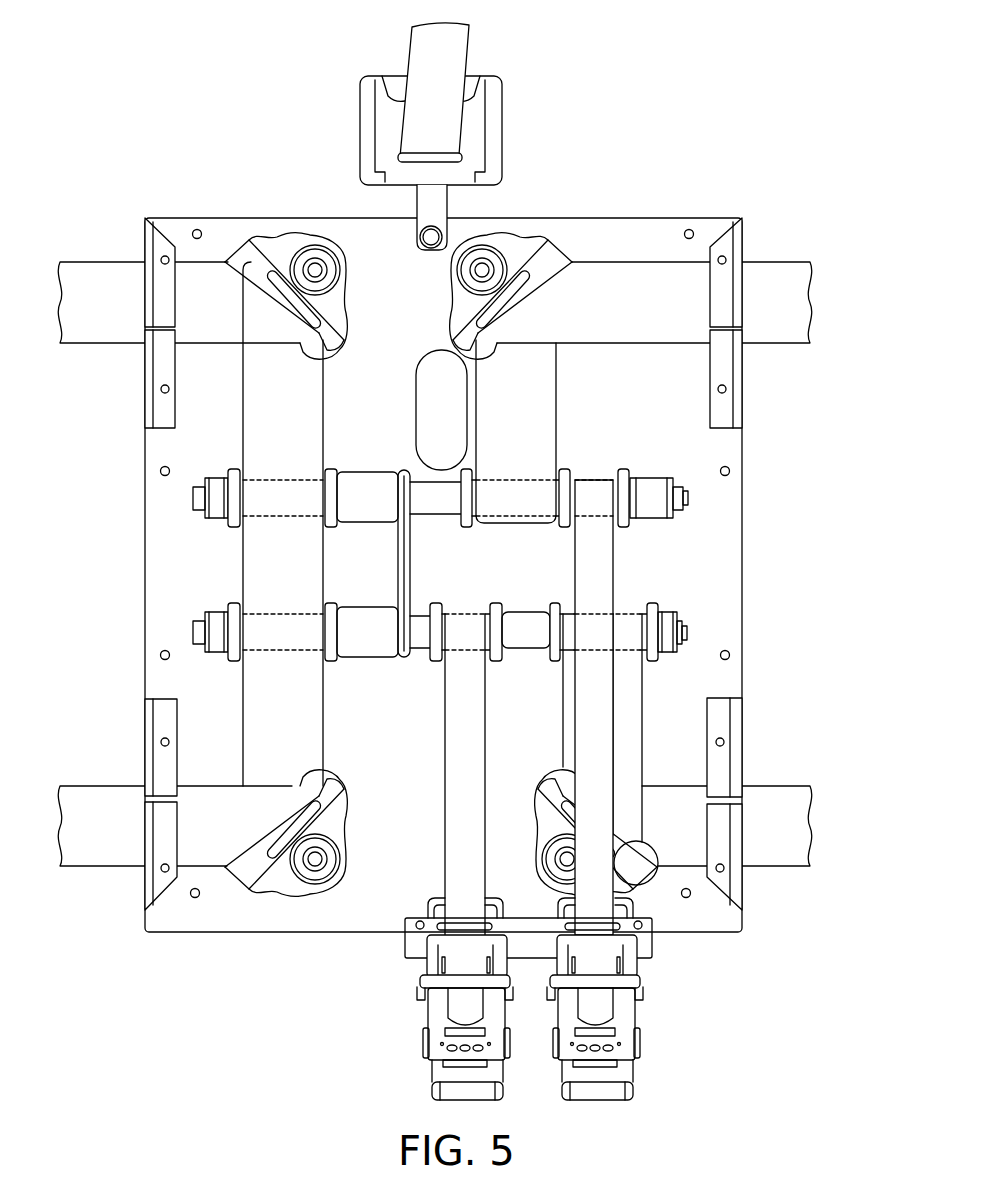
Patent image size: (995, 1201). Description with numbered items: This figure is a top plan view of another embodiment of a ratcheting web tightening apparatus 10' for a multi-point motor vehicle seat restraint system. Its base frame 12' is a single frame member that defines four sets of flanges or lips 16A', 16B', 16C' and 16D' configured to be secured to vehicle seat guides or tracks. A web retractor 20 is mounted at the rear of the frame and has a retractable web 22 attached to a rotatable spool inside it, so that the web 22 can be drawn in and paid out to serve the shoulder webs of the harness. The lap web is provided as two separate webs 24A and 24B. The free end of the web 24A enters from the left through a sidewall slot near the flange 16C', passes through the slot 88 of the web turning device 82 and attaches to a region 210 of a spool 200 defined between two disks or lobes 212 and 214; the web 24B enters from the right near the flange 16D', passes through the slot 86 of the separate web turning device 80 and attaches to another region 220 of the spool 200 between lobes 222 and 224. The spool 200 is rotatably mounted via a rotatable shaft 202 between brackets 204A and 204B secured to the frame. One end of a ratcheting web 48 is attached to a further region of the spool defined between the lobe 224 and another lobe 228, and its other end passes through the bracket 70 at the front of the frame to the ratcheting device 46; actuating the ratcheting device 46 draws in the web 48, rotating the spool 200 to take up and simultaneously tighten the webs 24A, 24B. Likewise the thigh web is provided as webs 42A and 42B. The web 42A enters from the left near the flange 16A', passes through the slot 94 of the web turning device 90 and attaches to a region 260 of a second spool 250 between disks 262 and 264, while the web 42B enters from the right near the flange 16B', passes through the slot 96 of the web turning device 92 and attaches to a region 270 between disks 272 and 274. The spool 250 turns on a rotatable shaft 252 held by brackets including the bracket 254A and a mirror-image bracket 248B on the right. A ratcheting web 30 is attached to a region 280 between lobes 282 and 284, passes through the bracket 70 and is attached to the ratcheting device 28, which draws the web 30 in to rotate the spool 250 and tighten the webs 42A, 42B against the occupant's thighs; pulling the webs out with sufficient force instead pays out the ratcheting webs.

The ratcheting web tightening apparatus 10' is at (435, 553).
The base frame 12' is at (443, 603).
The flange 16A' is at (173, 836).
The flange 16B' is at (758, 809).
The flange 16C' is at (155, 297).
The flange 16D' is at (736, 297).
The web retractor 20 is at (503, 113).
The retractable web 22 is at (466, 48).
The lap web 24A is at (83, 345).
The lap web 24B is at (768, 345).
The ratcheting device 28 is at (412, 1010).
The ratcheting web 30 is at (465, 722).
The thigh web 42A is at (110, 786).
The thigh web 42B is at (778, 786).
The ratcheting device 46 is at (648, 1005).
The ratcheting web 48 is at (590, 720).
The bracket 70 is at (405, 940).
The web turning device 80 is at (505, 248).
The web turning device 82 is at (287, 252).
The slot 86 is at (557, 257).
The slot 88 is at (242, 248).
The web turning device 90 is at (345, 835).
The web turning device 92 is at (640, 880).
The slot 94 is at (335, 782).
The slot 96 is at (645, 860).
The spool 200 is at (370, 470).
The rotatable shaft 202 is at (482, 462).
The bracket 204A is at (210, 478).
The bracket 204B is at (676, 478).
The region of spool 210 is at (279, 490).
The disk or lobe 212 is at (235, 469).
The disk or lobe 214 is at (331, 469).
The region of spool 220 is at (516, 492).
The disk or lobe 222 is at (466, 469).
The disk or lobe 224 is at (565, 469).
The disk or lobe 228 is at (624, 469).
The nut 248B is at (678, 612).
The spool 250 is at (368, 662).
The rotatable shaft 252 is at (478, 621).
The bracket 254A is at (210, 612).
The region of spool 260 is at (279, 620).
The disk 262 is at (235, 603).
The disk 264 is at (331, 603).
The region of spool 270 is at (628, 620).
The disk 272 is at (556, 603).
The disk 274 is at (655, 603).
The region of spool 280 is at (462, 620).
The disk or lobe 282 is at (436, 603).
The disk or lobe 284 is at (496, 603).